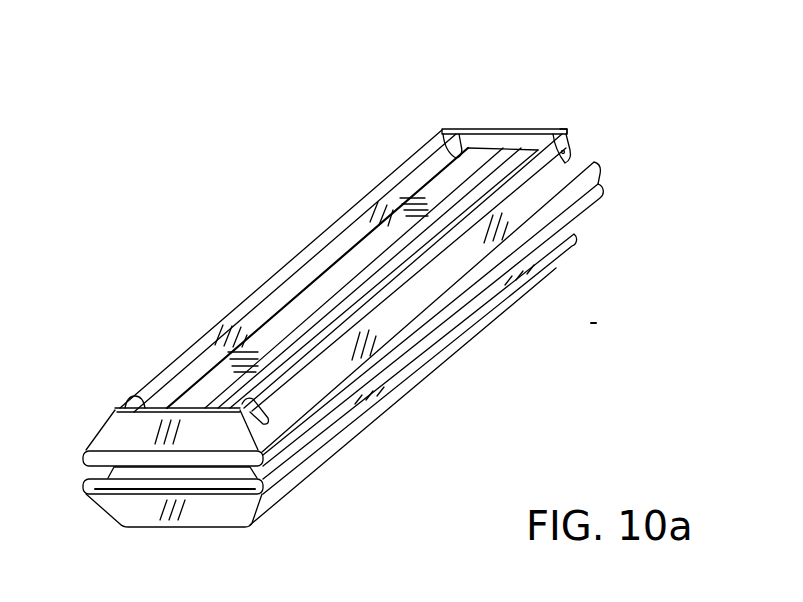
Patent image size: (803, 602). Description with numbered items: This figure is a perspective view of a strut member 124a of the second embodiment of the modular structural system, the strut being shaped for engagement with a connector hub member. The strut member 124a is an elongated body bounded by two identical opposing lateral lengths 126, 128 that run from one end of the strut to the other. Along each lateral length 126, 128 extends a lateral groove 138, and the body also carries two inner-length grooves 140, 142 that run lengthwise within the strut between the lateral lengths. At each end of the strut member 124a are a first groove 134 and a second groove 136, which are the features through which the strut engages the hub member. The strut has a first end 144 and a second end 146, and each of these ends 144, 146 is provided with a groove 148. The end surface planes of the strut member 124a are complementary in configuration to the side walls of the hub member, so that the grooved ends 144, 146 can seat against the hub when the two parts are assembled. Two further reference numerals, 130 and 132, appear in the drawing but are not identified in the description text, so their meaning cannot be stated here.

The strut member 124a is at (347, 106).
The lateral length 126 is at (541, 128).
The lateral length 128 is at (228, 313).
The latch rib 130 is at (412, 222).
The lower flange 132 is at (360, 422).
The first groove 134 is at (571, 142).
The second groove 136 is at (452, 132).
The lateral groove 138 is at (594, 176).
The inner-length groove 140 is at (511, 203).
The inner-length groove 142 is at (289, 300).
The first end 144 is at (90, 448).
The second end 146 is at (567, 129).
The groove 148 is at (130, 496).